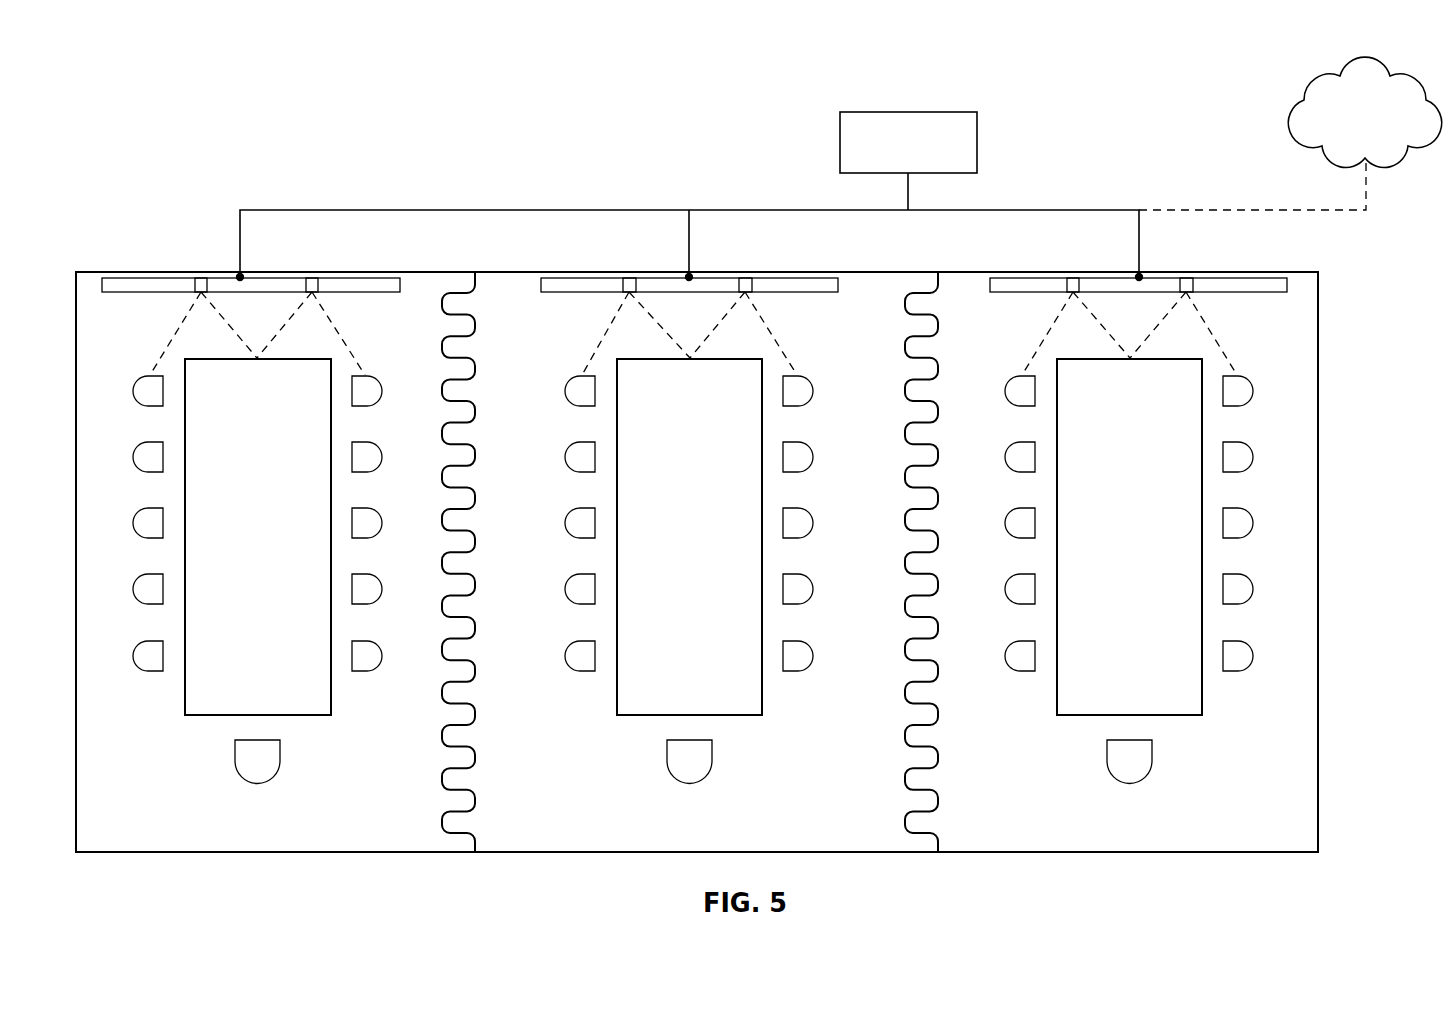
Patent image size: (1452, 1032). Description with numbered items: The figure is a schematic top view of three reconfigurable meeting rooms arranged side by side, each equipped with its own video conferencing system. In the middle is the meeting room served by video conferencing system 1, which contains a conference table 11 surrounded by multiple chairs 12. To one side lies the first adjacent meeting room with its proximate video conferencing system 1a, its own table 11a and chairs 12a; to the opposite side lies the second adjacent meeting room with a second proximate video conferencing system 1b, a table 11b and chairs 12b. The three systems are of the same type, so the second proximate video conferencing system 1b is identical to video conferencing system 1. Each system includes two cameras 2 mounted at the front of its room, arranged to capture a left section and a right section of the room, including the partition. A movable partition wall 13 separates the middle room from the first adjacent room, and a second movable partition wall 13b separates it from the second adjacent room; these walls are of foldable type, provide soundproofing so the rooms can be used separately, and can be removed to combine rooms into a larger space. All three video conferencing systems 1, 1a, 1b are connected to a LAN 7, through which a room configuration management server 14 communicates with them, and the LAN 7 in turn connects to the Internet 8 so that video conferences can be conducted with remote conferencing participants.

The video conferencing system 1 is at (572, 276).
The proximate video conferencing system 1a is at (1278, 272).
The second proximate video conferencing system 1b is at (252, 280).
The camera 2 is at (200, 276).
The LAN 7 is at (1073, 210).
The Internet 8 is at (1415, 100).
The conference table 11 is at (748, 705).
The table 11a is at (1188, 705).
The table 11b is at (315, 705).
The chair 12 is at (791, 441).
The chair 12a is at (1231, 441).
The chair 12b is at (360, 441).
The movable partition wall 13 is at (941, 797).
The second movable partition wall 13b is at (478, 797).
The room configuration management server 14 is at (917, 125).